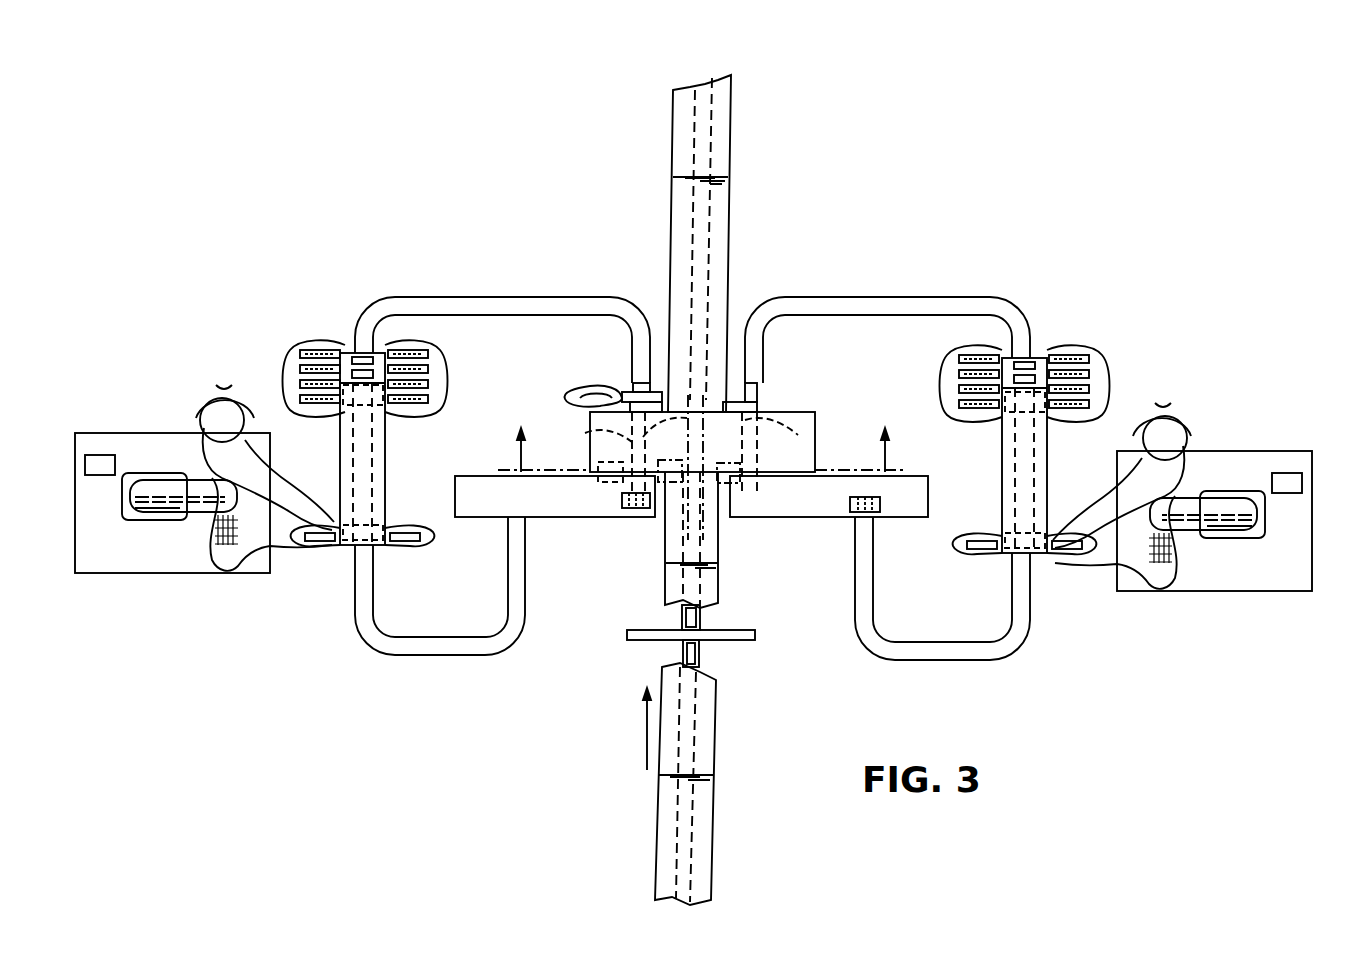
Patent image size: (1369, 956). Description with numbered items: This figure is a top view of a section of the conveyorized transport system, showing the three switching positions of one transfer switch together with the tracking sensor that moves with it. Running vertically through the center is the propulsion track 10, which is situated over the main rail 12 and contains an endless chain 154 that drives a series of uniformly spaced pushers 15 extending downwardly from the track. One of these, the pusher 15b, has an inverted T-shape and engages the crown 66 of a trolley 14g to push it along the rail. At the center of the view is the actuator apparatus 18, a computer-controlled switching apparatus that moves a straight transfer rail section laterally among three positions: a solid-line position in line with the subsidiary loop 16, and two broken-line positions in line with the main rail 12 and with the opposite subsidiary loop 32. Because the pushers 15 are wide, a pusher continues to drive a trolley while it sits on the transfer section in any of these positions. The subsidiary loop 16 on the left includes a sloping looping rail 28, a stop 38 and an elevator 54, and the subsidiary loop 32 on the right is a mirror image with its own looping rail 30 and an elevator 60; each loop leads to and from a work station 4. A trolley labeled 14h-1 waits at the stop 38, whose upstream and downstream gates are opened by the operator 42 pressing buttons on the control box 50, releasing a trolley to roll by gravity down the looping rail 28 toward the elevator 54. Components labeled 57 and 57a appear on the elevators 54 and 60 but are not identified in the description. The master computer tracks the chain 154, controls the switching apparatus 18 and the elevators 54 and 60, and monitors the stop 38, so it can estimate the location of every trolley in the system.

The web strip (lower section) 10 is at (705, 705).
The web strip (upper section) 12 is at (716, 596).
The cross bar 15 is at (724, 630).
The connector 154 is at (701, 665).
The left tubular bracket 16 is at (479, 292).
The top rail of left bracket 28 is at (567, 297).
The right tubular bracket 32 is at (968, 296).
The right clamp 30 is at (1025, 583).
The left clamp 38 is at (385, 450).
The finger grips 14h-1 is at (440, 375).
The clamp 14g is at (568, 398).
The tab 15b is at (752, 395).
The central block 18 is at (800, 418).
The tab 66 is at (637, 385).
The section line 4- 4 is at (701, 452).
The left tray 54 is at (578, 502).
The right tray 60 is at (758, 516).
The connector box 57 is at (632, 509).
The connector box 57a is at (849, 493).
The operator head 42 is at (199, 400).
The console 50 is at (100, 456).